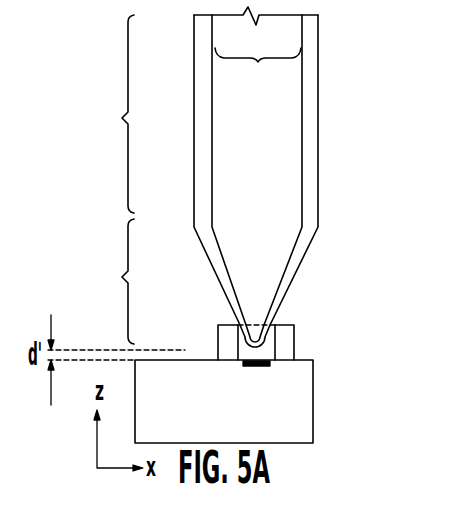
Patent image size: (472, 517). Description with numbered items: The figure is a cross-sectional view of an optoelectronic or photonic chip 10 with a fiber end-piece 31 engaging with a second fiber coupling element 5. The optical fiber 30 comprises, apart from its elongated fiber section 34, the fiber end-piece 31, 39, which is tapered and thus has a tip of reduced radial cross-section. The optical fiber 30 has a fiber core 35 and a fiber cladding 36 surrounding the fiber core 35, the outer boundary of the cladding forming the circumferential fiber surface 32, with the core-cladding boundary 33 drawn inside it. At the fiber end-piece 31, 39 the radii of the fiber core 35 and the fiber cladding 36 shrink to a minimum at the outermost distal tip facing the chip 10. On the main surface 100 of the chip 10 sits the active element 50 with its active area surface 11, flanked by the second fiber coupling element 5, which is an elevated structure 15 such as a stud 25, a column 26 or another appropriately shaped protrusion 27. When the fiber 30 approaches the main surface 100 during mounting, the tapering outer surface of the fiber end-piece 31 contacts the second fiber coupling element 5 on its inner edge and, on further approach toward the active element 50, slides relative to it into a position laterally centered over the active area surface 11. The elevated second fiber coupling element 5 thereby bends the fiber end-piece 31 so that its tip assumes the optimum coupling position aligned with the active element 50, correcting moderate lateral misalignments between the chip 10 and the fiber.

The optical fiber 30 is at (218, 177).
The circumferential fiber surface 32 is at (318, 220).
The inner wall / channel of capillary 33 is at (300, 190).
The elongated fiber section 34 is at (117, 114).
The fiber core 35 is at (258, 70).
The fiber cladding 36 is at (203, 82).
The fiber end-piece 31 is at (104, 281).
The tapered tip section 39 is at (104, 281).
The main surface 100 is at (178, 349).
The second fiber coupling element 5 is at (306, 312).
The elevated structure 15 is at (306, 312).
The stud 25 is at (306, 312).
The column 26 is at (306, 312).
The protrusion 27 is at (288, 336).
The optoelectronic or photonic chip 10 is at (305, 407).
The active area surface 11 is at (235, 392).
The optoelectronic and/or photonic active element 50 is at (244, 367).